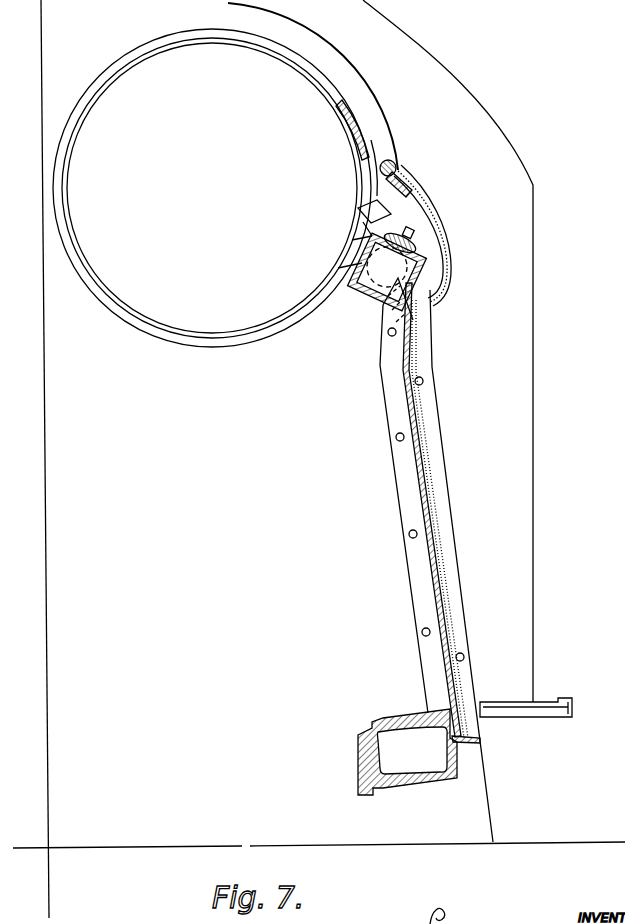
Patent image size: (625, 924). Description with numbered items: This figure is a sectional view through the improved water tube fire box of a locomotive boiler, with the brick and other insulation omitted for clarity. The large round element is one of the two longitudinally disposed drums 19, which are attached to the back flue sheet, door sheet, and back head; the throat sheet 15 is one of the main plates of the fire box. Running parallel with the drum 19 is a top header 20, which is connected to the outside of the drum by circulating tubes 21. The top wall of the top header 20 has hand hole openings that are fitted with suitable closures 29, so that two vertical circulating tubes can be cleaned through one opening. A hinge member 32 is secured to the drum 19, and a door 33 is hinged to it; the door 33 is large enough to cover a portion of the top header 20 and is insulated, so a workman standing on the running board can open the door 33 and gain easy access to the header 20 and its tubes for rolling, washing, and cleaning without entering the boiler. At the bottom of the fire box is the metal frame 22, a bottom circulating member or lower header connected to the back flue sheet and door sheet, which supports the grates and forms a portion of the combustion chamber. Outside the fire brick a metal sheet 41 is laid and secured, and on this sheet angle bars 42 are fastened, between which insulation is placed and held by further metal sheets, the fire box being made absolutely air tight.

The throat sheet 15 is at (361, 358).
The drum 19 is at (212, 188).
The top header 20 is at (405, 268).
The circulating tube 21 is at (362, 255).
The metal frame 22 is at (385, 722).
The closure 29 is at (414, 236).
The hinge member 32 is at (357, 126).
The door 33 is at (425, 217).
The metal sheet 41 is at (420, 493).
The angle bar 42 is at (434, 453).